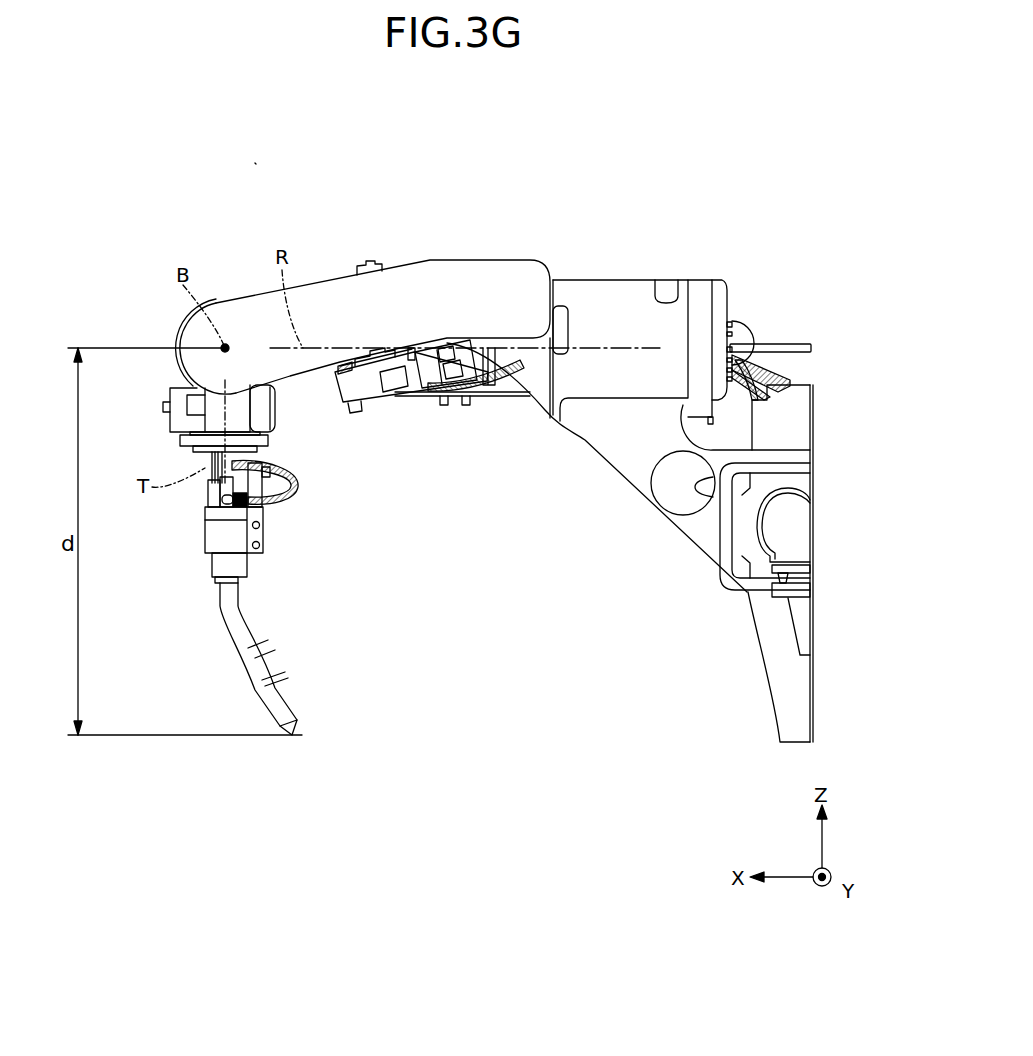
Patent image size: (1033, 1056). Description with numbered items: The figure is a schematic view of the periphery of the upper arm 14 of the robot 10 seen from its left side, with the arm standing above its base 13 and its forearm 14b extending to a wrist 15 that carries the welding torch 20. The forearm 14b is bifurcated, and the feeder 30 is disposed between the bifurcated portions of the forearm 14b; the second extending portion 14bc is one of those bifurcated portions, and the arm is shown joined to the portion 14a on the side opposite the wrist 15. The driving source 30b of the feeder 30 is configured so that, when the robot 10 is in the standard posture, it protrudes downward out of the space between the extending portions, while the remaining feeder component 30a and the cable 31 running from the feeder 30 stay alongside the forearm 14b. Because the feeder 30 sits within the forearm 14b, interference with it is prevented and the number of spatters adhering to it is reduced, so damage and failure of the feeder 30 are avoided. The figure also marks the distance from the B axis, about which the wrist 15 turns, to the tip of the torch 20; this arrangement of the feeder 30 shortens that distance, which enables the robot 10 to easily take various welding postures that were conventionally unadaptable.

The robot 10 is at (260, 165).
The base 13 is at (780, 640).
The upper arm 14 is at (642, 196).
The lower arm 14a is at (612, 278).
The forearm 14b is at (535, 252).
The second extending portion 14bc is at (414, 262).
The wrist 15 is at (166, 386).
The torch 20 is at (218, 601).
The feeder 30 is at (478, 463).
The cable guide member 30a is at (452, 400).
The driving source 30b is at (370, 394).
The cable 31 is at (493, 398).